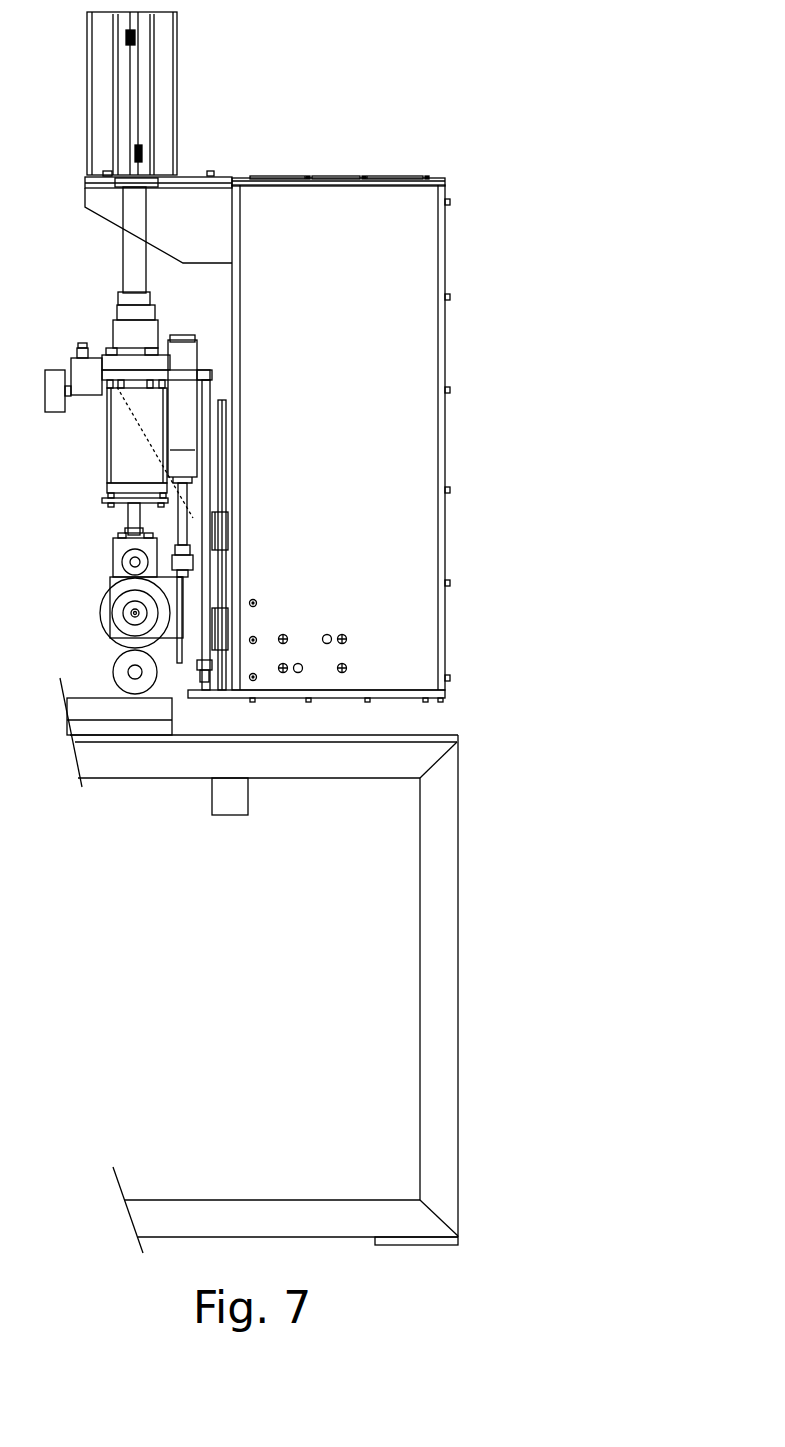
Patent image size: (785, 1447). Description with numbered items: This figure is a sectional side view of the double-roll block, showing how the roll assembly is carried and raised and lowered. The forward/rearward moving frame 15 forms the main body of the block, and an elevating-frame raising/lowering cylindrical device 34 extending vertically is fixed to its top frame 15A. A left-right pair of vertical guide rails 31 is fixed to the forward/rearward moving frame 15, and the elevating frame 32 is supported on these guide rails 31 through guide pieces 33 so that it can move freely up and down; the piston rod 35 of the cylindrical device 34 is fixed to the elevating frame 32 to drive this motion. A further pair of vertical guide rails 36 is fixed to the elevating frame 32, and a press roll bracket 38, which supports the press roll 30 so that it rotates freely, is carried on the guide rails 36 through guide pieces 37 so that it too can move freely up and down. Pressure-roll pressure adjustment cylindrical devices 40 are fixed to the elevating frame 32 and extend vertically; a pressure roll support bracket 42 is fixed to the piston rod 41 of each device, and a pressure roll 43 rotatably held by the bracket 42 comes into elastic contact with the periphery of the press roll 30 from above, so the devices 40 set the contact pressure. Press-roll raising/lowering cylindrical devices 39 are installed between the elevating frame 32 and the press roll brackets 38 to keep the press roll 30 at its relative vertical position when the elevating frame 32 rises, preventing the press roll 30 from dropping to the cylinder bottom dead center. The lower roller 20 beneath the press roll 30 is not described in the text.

The elevating-frame raising/lowering cylindrical device 34 is at (167, 72).
The top frame 15A is at (348, 177).
The forward/rearward moving frame 15 is at (420, 286).
The piston rod 35 is at (125, 265).
The pressure-roll pressure adjustment cylindrical device 40 is at (130, 448).
The elevating frame 32 is at (206, 368).
The guide rail 31 is at (227, 408).
The press-roll raising/lowering cylindrical device 39 is at (183, 433).
The guide rail 36 is at (195, 563).
The guide piece 33 is at (222, 528).
The guide piece 37 is at (194, 676).
The piston rod 41 is at (127, 518).
The pressure roll 43 is at (130, 562).
The pressure roll support bracket 42 is at (120, 570).
The press roll bracket 38 is at (148, 622).
The press roll 30 is at (137, 640).
The roller 20 is at (130, 683).